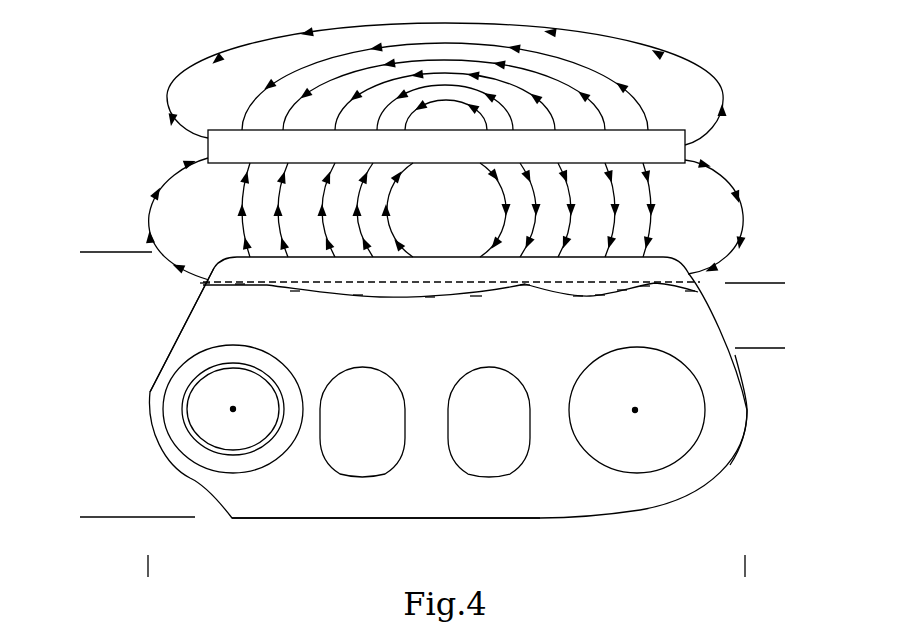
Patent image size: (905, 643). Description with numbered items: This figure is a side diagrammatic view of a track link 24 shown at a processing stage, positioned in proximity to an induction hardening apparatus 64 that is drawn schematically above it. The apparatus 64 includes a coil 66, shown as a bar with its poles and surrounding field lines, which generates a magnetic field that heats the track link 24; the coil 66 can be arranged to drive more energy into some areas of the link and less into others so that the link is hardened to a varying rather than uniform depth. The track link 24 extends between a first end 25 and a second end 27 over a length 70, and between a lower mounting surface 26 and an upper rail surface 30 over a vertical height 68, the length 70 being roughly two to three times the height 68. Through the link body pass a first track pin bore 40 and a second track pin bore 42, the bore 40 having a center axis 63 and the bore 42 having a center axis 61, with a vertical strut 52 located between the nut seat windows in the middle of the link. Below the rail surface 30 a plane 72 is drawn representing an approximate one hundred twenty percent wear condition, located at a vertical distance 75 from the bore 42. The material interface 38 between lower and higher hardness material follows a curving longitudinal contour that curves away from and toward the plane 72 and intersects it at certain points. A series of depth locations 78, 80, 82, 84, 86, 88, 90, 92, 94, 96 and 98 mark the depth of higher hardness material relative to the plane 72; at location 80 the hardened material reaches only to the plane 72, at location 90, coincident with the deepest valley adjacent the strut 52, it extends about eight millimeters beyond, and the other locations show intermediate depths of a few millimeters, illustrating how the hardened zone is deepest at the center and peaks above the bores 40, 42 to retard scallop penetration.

The track link 24 is at (740, 450).
The first end 25 is at (748, 415).
The lower mounting surface 26 is at (380, 519).
The second end 27 is at (150, 405).
The upper rail surface 30 is at (658, 257).
The material interface 38 is at (476, 300).
The first track pin bore 40 is at (211, 433).
The second track pin bore 42 is at (690, 430).
The vertical strut 52 is at (405, 410).
The center axis 61 is at (635, 412).
The center axis 63 is at (233, 411).
The induction hardening apparatus 64 is at (722, 150).
The coil 66 is at (206, 142).
The vertical height 68 is at (93, 252).
The length 70 is at (745, 565).
The plane 72 is at (475, 281).
The vertical distance 75 is at (770, 283).
The first depth location 78 is at (690, 294).
The second depth location 80 is at (645, 290).
The depth location 82 is at (622, 294).
The depth location 84 is at (600, 299).
The depth location 86 is at (578, 300).
The depth location 88 is at (525, 288).
The depth location 90 is at (430, 302).
The depth location 92 is at (358, 292).
The depth location 94 is at (295, 294).
The depth location 96 is at (240, 288).
The depth location 98 is at (205, 292).